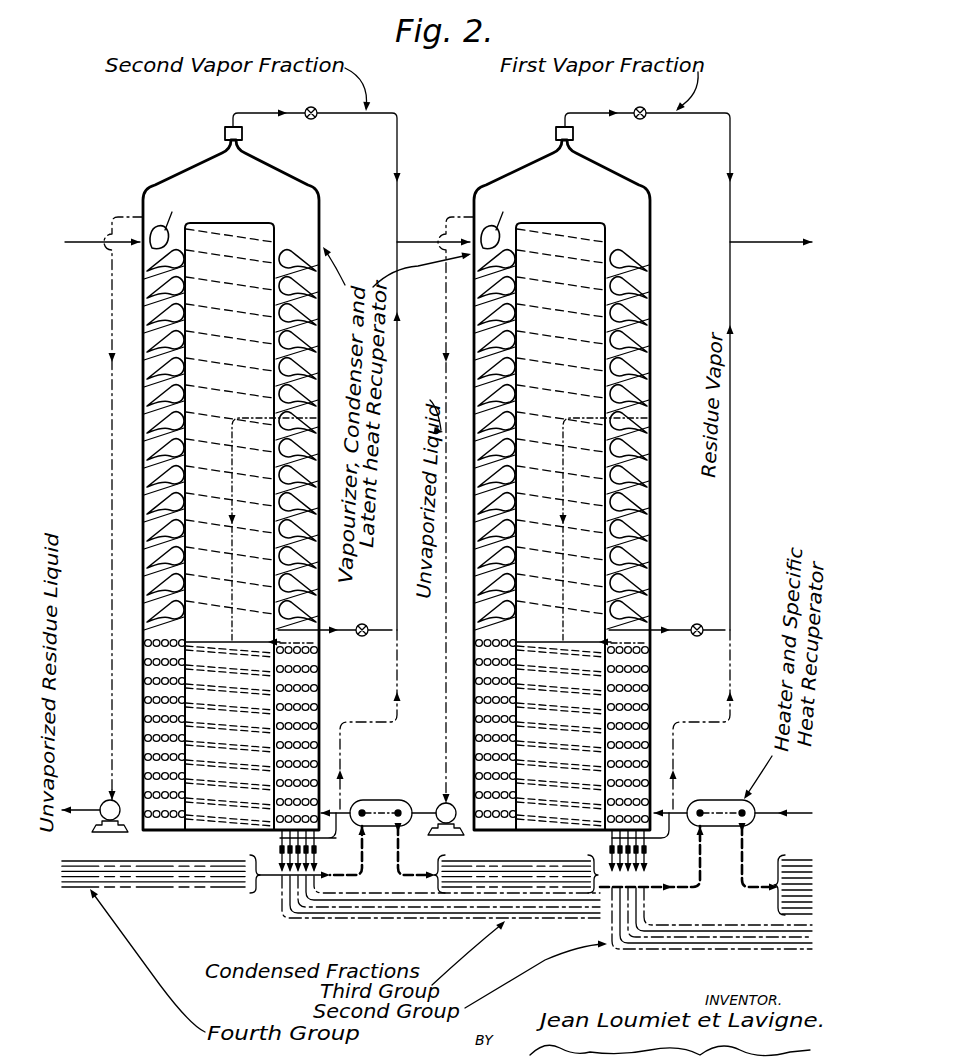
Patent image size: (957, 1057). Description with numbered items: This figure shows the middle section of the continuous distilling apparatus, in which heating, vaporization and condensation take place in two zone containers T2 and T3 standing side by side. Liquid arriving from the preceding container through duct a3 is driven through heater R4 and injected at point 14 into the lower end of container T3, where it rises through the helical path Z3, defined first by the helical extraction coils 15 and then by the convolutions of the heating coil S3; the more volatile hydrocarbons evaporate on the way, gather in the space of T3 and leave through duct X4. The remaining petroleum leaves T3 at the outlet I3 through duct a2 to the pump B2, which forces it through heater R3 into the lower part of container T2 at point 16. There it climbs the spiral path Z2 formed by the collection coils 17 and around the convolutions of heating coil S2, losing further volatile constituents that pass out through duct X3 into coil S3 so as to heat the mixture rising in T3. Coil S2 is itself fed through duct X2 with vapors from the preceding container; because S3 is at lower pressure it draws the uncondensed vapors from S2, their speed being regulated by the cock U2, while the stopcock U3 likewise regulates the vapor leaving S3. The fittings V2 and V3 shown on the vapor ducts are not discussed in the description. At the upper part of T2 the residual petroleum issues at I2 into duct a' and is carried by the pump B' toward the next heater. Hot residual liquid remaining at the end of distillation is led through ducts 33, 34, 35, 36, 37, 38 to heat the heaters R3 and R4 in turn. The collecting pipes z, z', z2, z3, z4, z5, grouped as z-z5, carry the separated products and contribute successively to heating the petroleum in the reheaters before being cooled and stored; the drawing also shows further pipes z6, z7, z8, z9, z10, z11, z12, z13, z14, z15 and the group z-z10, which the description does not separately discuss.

The zone container T2 is at (231, 478).
The zone container T3 is at (562, 478).
The heating coil S2 is at (146, 636).
The heating coil S3 is at (547, 424).
The spiral path Z2 is at (180, 832).
The helical path Z3 is at (482, 729).
The collection coils 17 is at (316, 683).
The helical extraction coils 15 is at (602, 736).
The residual petroleum outlet I2 is at (140, 214).
The outlet I3 is at (454, 201).
The duct X2 is at (89, 234).
The duct X3 is at (270, 112).
The duct X4 is at (600, 112).
The valve on second vapor fraction line V2 is at (316, 107).
The valve on first vapor fraction line V3 is at (645, 107).
The cock U2 is at (362, 623).
The stopcock U3 is at (697, 623).
The duct a' is at (89, 550).
The duct a2 is at (442, 292).
The duct a3 is at (682, 810).
The pump B' is at (114, 833).
The pump B2 is at (450, 836).
The heater R3 is at (383, 800).
The heater R4 is at (718, 800).
The injection point 16 is at (359, 721).
The injection point 14 is at (693, 721).
The duct 33 is at (266, 882).
The duct 34 is at (368, 830).
The duct 35 is at (406, 840).
The duct 36 is at (660, 885).
The duct 37 is at (708, 828).
The duct 38 is at (752, 880).
The collecting pipe z is at (153, 864).
The collecting pipe z' is at (222, 901).
The collecting pipe z2 is at (168, 878).
The collecting pipe z3 is at (138, 878).
The collecting pipe z4 is at (90, 877).
The collecting pipe z5 is at (175, 860).
The condensed fraction pipe z6 is at (332, 922).
The condensed fraction pipe z7 is at (330, 918).
The condensed fraction pipe z8 is at (460, 915).
The condensed fraction pipe z9 is at (512, 912).
The condensed fraction pipe z10 is at (418, 893).
The condensed fraction pipe z11 is at (645, 950).
The condensed fraction pipe z12 is at (708, 945).
The condensed fraction pipe z13 is at (735, 940).
The condensed fraction pipe z14 is at (666, 932).
The condensed fraction pipe z15 is at (742, 924).
The collecting pipes z-z5 is at (516, 869).
The group of condensed fraction pipes z-z10 is at (802, 880).